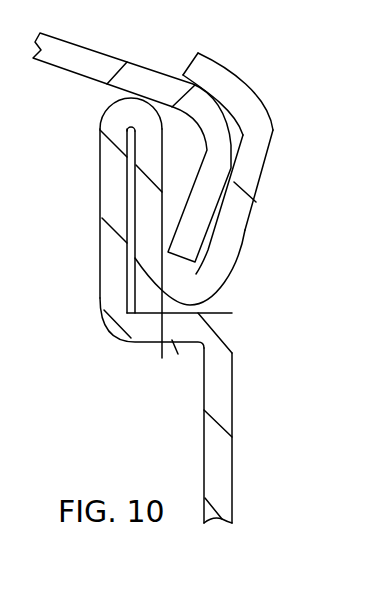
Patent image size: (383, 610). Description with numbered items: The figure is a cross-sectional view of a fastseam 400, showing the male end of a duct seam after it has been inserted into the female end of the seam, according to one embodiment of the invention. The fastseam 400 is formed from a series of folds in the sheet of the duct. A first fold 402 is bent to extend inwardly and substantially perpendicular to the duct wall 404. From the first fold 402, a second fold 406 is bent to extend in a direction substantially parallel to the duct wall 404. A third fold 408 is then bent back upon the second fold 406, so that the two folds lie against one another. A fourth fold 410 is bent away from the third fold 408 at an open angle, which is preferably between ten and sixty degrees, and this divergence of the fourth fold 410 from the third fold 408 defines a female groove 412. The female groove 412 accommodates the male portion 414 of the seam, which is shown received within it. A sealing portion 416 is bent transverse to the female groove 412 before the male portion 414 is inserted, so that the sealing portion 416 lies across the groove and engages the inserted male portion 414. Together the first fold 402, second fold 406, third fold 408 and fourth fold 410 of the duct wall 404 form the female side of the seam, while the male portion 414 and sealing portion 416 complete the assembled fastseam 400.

The fastseam 400 is at (92, 374).
The first fold 402 is at (156, 345).
The duct wall 404 is at (222, 418).
The second fold 406 is at (100, 224).
The third fold 408 is at (142, 168).
The fourth fold 410 is at (250, 213).
The female groove 412 is at (228, 262).
The male portion 414 is at (217, 180).
The sealing portion 416 is at (227, 79).